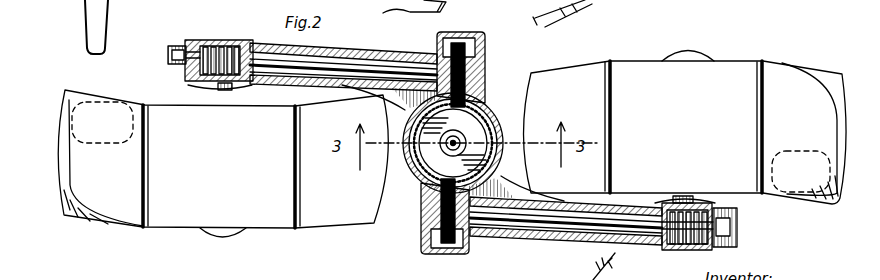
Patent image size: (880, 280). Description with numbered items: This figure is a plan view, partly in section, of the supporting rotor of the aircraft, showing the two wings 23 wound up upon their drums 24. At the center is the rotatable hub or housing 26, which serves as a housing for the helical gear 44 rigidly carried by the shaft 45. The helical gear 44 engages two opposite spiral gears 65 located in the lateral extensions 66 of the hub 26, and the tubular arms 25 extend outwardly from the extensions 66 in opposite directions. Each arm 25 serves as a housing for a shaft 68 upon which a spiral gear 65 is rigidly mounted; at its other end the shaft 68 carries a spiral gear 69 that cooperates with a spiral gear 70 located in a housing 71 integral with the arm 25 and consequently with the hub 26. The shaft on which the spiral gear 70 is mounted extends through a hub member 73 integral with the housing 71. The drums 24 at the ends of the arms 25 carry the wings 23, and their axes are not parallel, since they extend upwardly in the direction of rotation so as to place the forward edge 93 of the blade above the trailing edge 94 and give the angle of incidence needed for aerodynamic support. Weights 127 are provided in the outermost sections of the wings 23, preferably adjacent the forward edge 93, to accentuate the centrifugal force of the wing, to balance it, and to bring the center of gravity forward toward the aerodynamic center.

The wing 23 is at (128, 221).
The drum 24 is at (212, 236).
The arm 25 is at (337, 52).
The rotatable hub or housing 26 is at (487, 113).
The helical gear 44 is at (431, 169).
The shaft 45 is at (458, 140).
The spiral gear 65 is at (461, 40).
The lateral extension 66 is at (485, 52).
The shaft 68 is at (364, 72).
The spiral gear 69 is at (230, 40).
The spiral gear 70 is at (183, 50).
The housing 71 is at (184, 59).
The hub member 73 is at (195, 86).
The forward edge 93 is at (107, 89).
The trailing edge 94 is at (286, 230).
The weight 127 is at (90, 145).